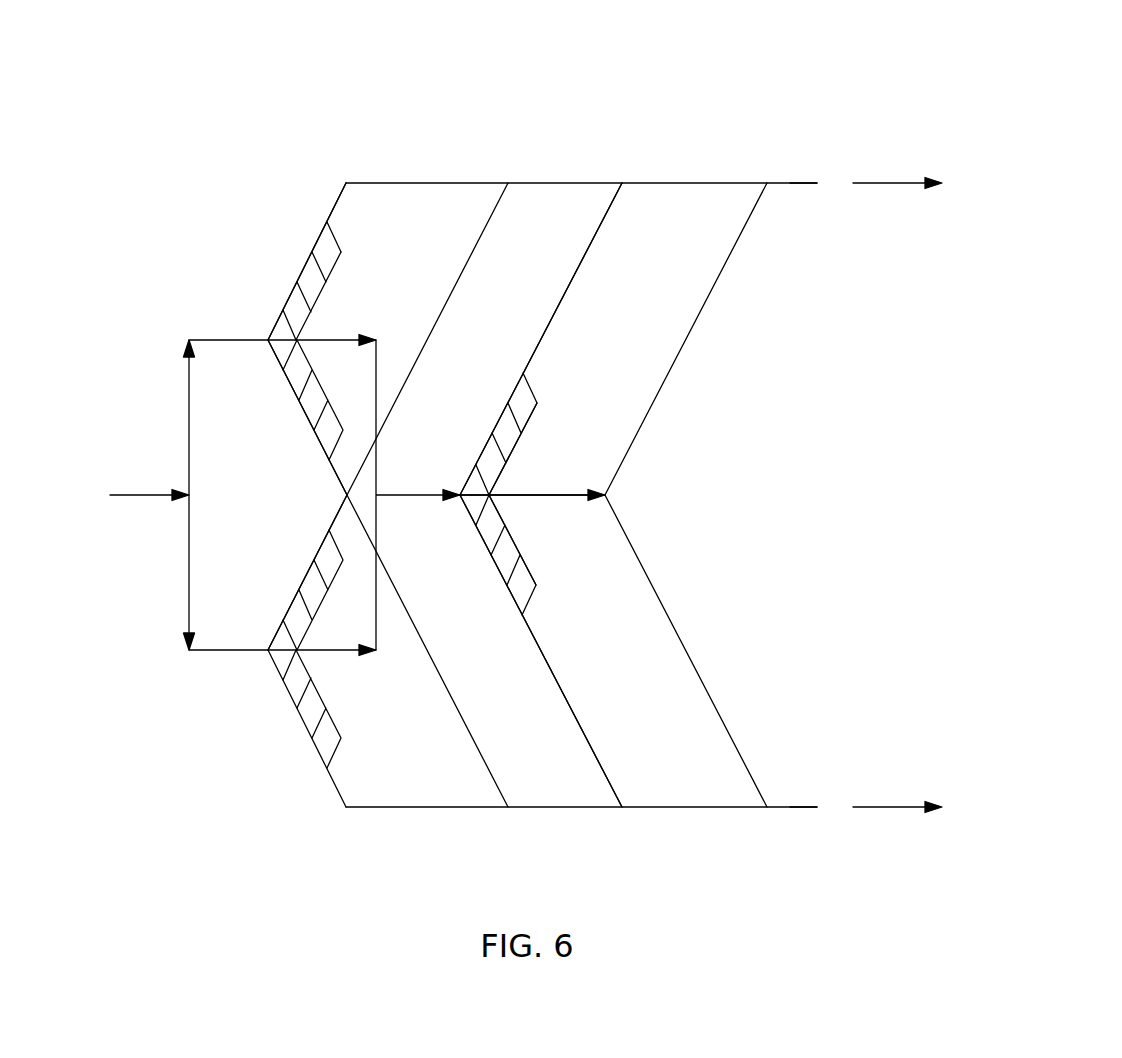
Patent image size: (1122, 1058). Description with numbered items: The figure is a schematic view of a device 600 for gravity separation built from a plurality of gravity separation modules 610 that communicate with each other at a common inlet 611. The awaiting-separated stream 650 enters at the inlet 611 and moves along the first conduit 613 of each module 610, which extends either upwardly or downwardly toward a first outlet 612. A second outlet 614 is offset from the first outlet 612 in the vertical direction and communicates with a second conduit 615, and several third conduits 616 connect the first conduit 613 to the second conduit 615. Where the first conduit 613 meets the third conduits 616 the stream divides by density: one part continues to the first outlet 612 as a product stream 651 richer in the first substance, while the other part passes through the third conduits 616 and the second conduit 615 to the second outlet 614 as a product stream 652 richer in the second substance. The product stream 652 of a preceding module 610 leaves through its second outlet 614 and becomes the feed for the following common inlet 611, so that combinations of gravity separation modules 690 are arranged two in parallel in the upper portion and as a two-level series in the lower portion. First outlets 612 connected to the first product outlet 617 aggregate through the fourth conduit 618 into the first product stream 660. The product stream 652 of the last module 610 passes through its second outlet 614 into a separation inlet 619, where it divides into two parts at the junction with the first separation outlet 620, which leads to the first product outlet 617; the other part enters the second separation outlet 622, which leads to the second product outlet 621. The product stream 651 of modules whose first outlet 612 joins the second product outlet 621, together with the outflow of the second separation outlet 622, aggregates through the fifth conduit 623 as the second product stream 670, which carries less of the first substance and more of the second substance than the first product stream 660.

The device for gravity separation 600 is at (722, 467).
The gravity separation module 610 is at (540, 553).
The inlet 611 is at (230, 338).
The first outlet 612 is at (336, 198).
The first conduit 613 is at (308, 258).
The second outlet 614 is at (335, 338).
The second conduit 615 is at (337, 258).
The third conduits 616 is at (328, 225).
The first product outlet 617 is at (810, 183).
The fourth conduit 618 is at (683, 183).
The separation inlet 619 is at (518, 498).
The first separation outlet 620 is at (688, 343).
The second product outlet 621 is at (797, 807).
The second separation outlet 622 is at (690, 657).
The fifth conduit 623 is at (697, 807).
The awaiting-separated stream 650 is at (152, 490).
The product stream 651 is at (612, 208).
The product stream 652 is at (538, 398).
The first product stream 660 is at (897, 183).
The second product stream 670 is at (897, 807).
The combination of gravity separation modules 690 is at (485, 410).